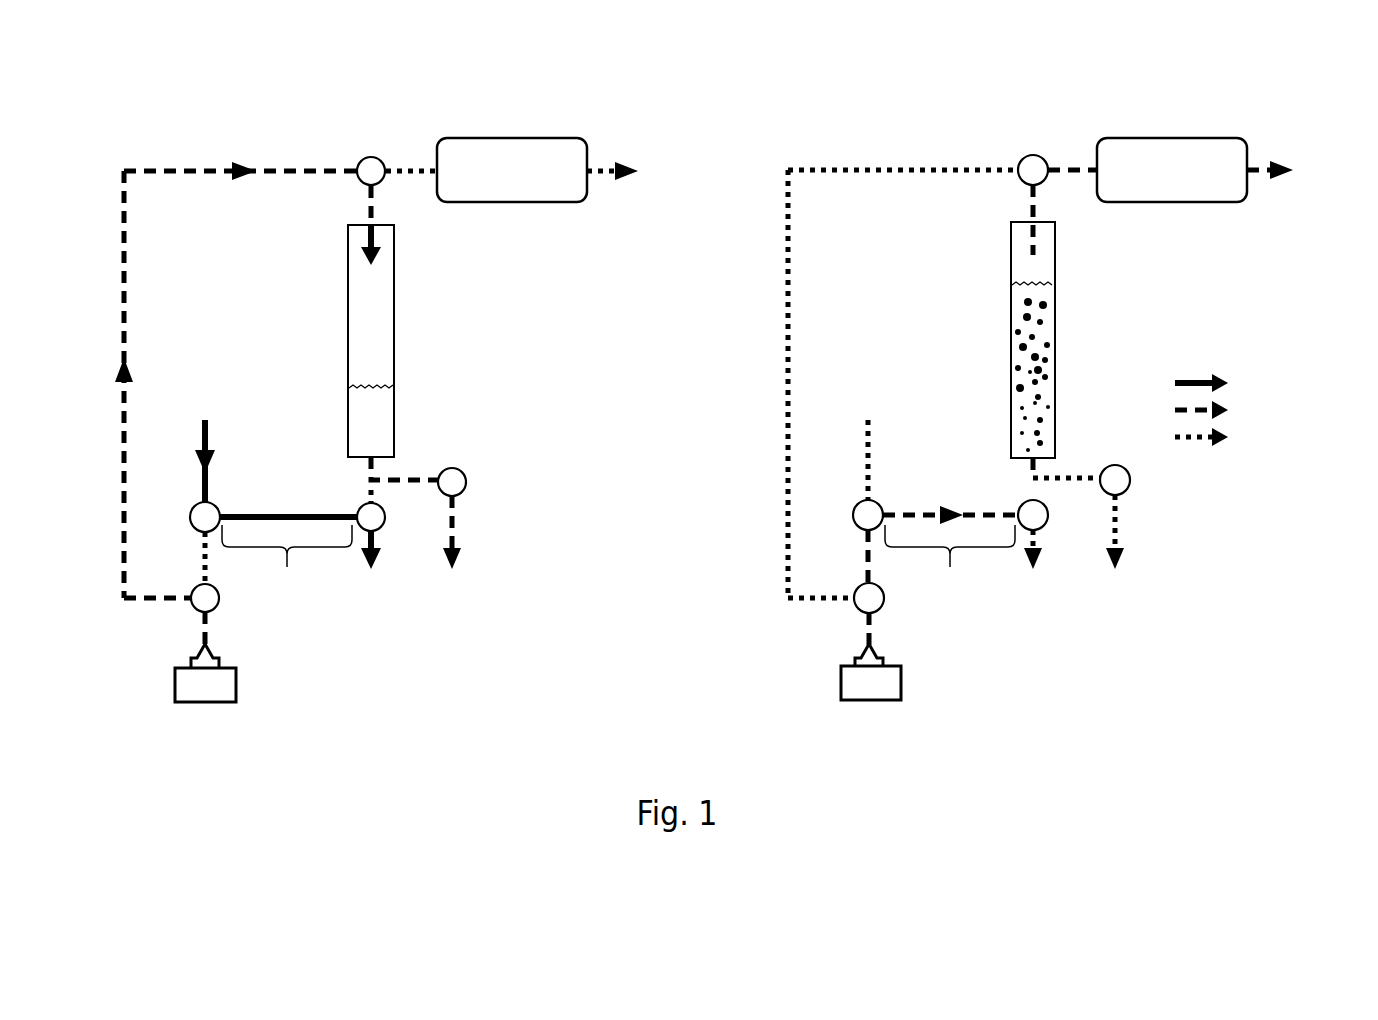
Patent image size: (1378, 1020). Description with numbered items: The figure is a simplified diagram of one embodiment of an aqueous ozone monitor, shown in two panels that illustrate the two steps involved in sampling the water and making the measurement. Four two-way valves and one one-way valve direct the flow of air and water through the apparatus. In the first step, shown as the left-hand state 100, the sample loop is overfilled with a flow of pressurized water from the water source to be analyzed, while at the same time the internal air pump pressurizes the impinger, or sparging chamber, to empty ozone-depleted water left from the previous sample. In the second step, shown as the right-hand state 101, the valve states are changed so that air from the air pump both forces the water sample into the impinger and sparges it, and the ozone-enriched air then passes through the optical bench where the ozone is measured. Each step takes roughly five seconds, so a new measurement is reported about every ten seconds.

The system in fill sample loop and empty sparging chamber state 100 is at (413, 436).
The system in sparge sample and measure ozone state 101 is at (1043, 436).